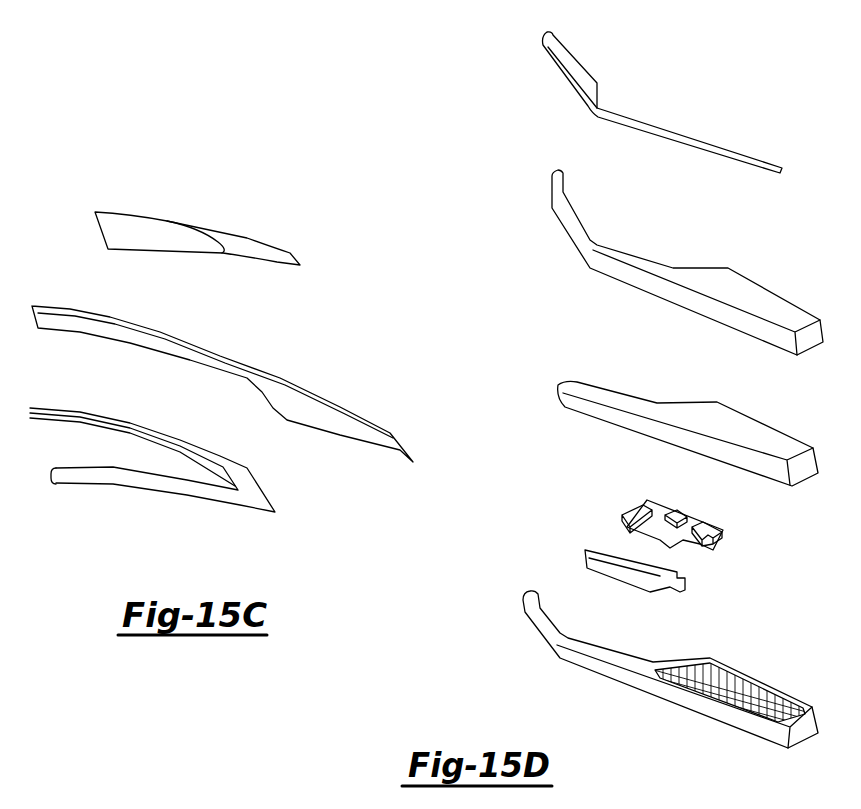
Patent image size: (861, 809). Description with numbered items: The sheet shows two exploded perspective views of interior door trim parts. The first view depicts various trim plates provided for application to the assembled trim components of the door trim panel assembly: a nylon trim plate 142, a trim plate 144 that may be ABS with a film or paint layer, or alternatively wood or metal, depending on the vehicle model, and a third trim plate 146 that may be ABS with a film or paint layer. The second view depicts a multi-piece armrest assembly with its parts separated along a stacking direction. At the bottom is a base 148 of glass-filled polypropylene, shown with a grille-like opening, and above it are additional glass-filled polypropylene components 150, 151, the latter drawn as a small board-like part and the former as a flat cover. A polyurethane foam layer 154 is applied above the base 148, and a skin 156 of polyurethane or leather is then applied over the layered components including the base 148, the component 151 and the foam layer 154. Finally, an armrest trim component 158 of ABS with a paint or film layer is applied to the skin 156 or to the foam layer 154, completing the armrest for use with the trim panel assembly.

In FIG. 15C, the nylon trim plate 142 is at (198, 223).
In FIG. 15C, the trim plate 144 is at (265, 372).
In FIG. 15C, the third trim plate 146 is at (120, 482).
In FIG. 15D, the base 148 is at (687, 710).
In FIG. 15D, the glass-filled polypropylene component 150 is at (685, 590).
In FIG. 15D, the glass-filled polypropylene component 151 is at (722, 540).
In FIG. 15D, the polyurethane foam layer 154 is at (633, 435).
In FIG. 15D, the skin 156 is at (568, 240).
In FIG. 15D, the armrest trim component 158 is at (560, 70).